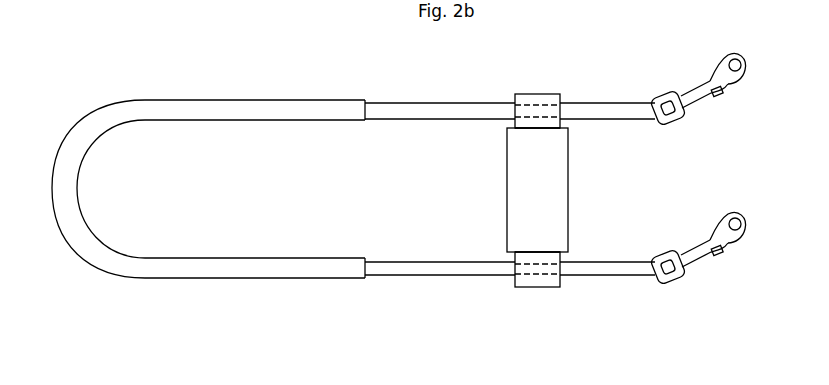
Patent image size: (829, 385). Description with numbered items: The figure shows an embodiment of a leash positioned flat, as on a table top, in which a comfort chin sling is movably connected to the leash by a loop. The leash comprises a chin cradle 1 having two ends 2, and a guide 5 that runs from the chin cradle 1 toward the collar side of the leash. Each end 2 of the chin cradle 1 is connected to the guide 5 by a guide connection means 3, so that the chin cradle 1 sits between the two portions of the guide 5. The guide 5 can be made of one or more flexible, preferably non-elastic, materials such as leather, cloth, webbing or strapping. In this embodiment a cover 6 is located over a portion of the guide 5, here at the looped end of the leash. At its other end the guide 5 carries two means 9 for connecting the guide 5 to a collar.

The chin cradle 1 is at (537, 190).
The ends of the chin cradle 2 is at (537, 128).
The guide connection means 3 is at (537, 110).
The guide 5 is at (443, 100).
The cover 6 is at (270, 108).
The means for connecting the guide to a collar 9 is at (707, 88).